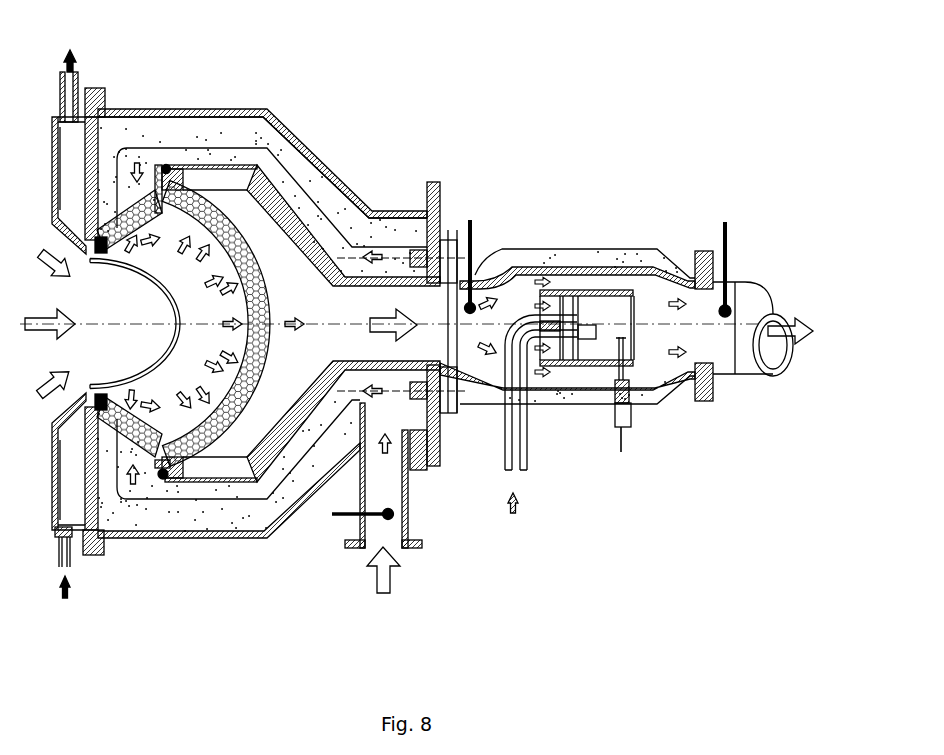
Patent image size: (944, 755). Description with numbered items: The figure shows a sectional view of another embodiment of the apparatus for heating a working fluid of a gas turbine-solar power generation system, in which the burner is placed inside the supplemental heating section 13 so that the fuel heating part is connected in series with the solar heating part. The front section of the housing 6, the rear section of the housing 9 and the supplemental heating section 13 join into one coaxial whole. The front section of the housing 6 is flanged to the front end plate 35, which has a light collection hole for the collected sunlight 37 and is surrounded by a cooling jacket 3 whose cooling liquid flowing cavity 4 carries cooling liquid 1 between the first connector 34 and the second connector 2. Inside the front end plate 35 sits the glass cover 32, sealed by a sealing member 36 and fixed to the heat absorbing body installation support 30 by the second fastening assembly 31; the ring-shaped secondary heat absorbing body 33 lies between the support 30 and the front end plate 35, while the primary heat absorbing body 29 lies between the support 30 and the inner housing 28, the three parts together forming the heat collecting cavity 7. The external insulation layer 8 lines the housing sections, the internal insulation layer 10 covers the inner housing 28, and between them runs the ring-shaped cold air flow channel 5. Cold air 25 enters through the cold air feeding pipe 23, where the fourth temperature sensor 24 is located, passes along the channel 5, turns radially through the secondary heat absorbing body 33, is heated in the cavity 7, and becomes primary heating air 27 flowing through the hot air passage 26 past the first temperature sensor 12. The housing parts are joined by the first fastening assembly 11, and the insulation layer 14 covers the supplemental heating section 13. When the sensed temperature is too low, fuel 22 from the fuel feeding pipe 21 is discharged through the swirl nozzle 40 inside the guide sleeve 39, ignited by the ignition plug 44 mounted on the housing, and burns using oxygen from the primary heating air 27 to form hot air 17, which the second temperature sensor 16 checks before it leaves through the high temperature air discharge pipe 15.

The cooling liquid 1 is at (71, 52).
The second connector 2 is at (72, 157).
The cooling jacket 3 is at (94, 100).
The cooling liquid flowing cavity 4 is at (120, 150).
The cold air flow channel 5 is at (158, 165).
The front section of the housing 6 is at (250, 133).
The heat collecting cavity 7 is at (335, 260).
The external insulation layer 8 is at (278, 128).
The rear section of the housing 9 is at (353, 195).
The internal insulation layer 10 is at (370, 262).
The first fastening assembly 11 is at (432, 185).
The first temperature sensor 12 is at (470, 222).
The supplemental heating section 13 is at (580, 292).
The insulation layer 14 is at (632, 252).
The high temperature air discharge pipe 15 is at (700, 252).
The second temperature sensor 16 is at (723, 222).
The hot air 17 is at (785, 290).
The fuel feeding pipe 21 is at (503, 470).
The fuel 22 is at (513, 513).
The cold air feeding pipe 23 is at (410, 450).
The fourth temperature sensor 24 is at (385, 520).
The cold air 25 is at (383, 593).
The hot air passage 26 is at (310, 495).
The primary heating air 27 is at (300, 470).
The inner housing 28 is at (290, 435).
The primary heat absorbing body 29 is at (335, 455).
The heat absorbing body installation support 30 is at (178, 445).
The second fastening assembly 31 is at (160, 478).
The glass cover 32 is at (145, 392).
The secondary heat absorbing body 33 is at (125, 395).
The first connector 34 is at (62, 565).
The front end plate 35 is at (52, 500).
The sealing member 36 is at (80, 458).
The collected sunlight 37 is at (48, 420).
The guide sleeve 39 is at (545, 383).
The swirl nozzle 40 is at (585, 363).
The ignition plug 44 is at (628, 430).